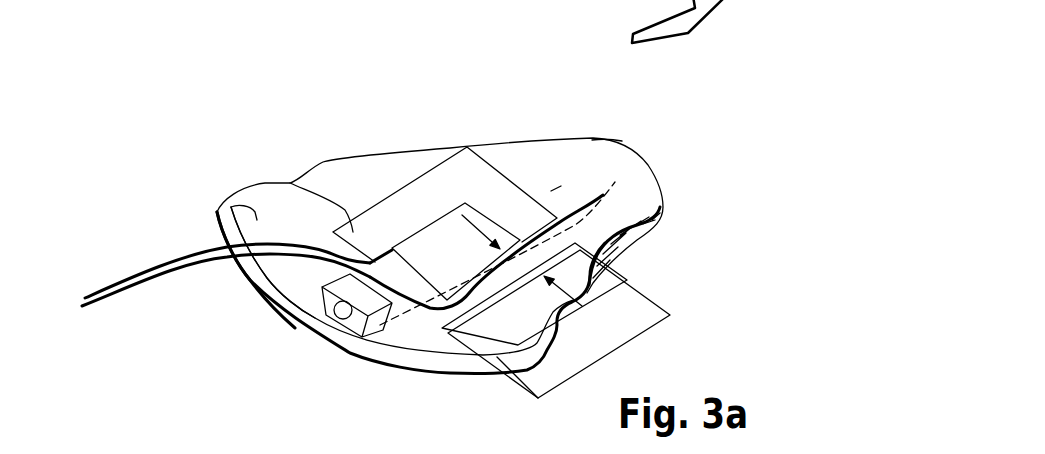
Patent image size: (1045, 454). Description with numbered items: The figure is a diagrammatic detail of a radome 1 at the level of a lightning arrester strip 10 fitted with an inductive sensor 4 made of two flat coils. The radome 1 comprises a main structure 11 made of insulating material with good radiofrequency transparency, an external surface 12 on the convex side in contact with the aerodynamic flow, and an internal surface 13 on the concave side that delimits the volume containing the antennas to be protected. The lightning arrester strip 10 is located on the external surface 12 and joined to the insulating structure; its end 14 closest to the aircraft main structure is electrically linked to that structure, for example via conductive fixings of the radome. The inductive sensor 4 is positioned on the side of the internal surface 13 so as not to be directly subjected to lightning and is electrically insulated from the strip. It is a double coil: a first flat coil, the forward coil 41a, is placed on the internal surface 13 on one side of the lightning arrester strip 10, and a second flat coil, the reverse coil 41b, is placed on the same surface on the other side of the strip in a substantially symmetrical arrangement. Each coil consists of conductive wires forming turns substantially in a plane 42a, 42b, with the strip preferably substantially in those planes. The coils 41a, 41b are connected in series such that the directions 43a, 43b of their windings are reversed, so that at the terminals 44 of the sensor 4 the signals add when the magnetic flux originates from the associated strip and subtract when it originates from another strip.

The radome 1 is at (385, 377).
The inductive sensor 4 is at (551, 189).
The lightning arrester strip 10 is at (621, 184).
The main structure 11 is at (592, 140).
The external surface 12 is at (647, 230).
The internal surface 13 is at (228, 210).
The strip end 14 is at (340, 310).
The forward coil 41a is at (463, 340).
The reverse coil 41b is at (430, 232).
The plane of the forward coil 42a is at (656, 330).
The plane of the reverse coil 42b is at (290, 183).
The winding direction of the forward coil 43a is at (615, 303).
The winding direction of the reverse coil 43b is at (493, 247).
The sensor terminals 44 is at (81, 283).